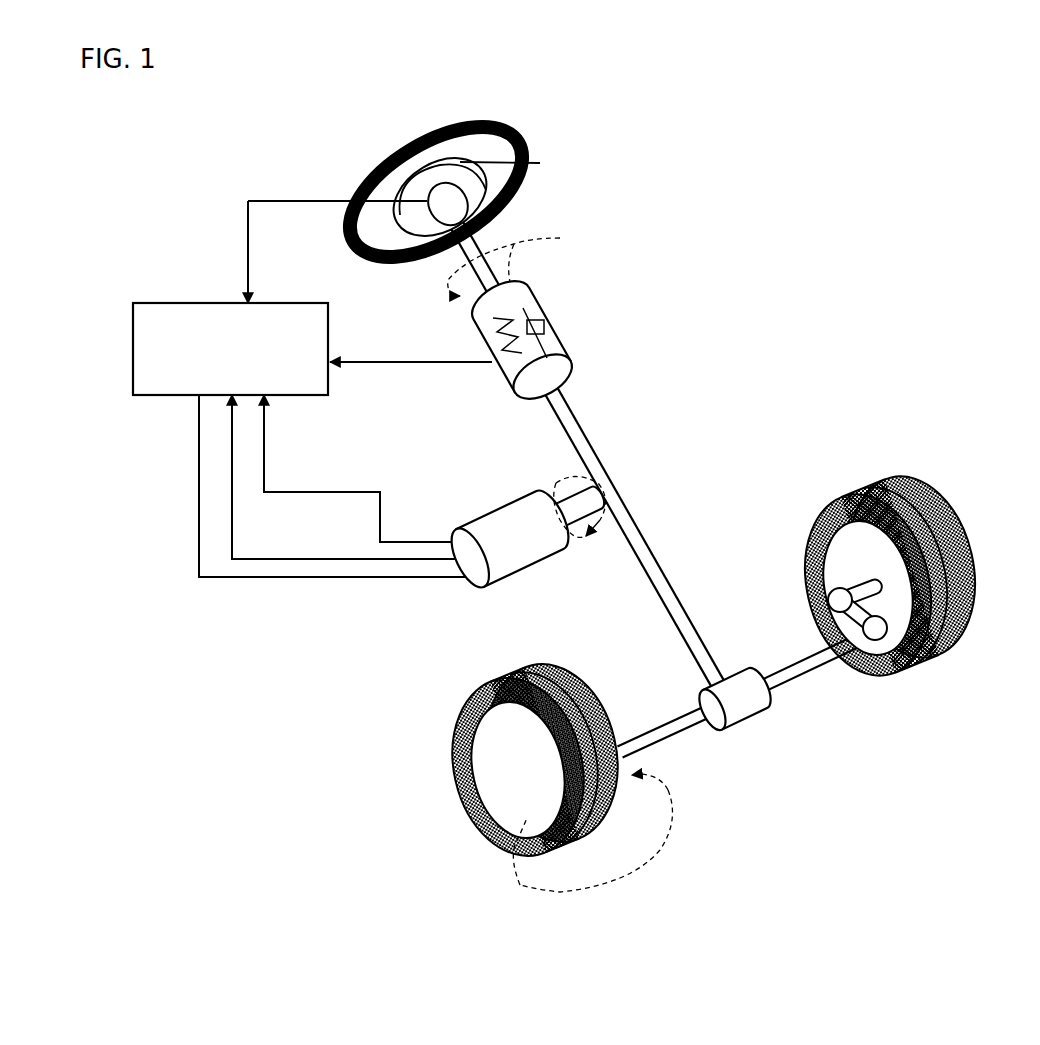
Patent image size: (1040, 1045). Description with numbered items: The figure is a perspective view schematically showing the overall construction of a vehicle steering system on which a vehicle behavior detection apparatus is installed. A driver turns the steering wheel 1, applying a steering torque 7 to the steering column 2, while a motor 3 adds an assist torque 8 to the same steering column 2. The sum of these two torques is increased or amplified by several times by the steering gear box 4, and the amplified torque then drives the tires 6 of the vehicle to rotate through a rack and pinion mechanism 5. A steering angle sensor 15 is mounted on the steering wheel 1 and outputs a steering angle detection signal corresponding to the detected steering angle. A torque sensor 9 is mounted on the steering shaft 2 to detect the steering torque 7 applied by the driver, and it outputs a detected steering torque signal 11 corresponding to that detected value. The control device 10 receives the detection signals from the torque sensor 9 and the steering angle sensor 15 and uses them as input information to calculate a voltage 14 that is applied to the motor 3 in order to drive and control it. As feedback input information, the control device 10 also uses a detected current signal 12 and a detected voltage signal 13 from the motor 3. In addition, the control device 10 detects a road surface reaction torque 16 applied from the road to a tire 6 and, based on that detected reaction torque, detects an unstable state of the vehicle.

The steering wheel 1 is at (448, 115).
The steering column 2 is at (638, 543).
The motor 3 is at (478, 592).
The steering gear box 4 is at (740, 718).
The rack and pinion mechanism 5 is at (665, 733).
The tires 6 is at (945, 652).
The steering torque 7 is at (510, 247).
The assist torque 8 is at (556, 483).
The torque sensor 9 is at (548, 320).
The control device 10 is at (217, 303).
The detected steering torque signal 11 is at (405, 362).
The detected current signal 12 is at (256, 559).
The detected voltage signal 13 is at (294, 492).
The voltage 14 is at (199, 555).
The steering angle sensor 15 is at (540, 163).
The road surface reaction torque 16 is at (520, 885).